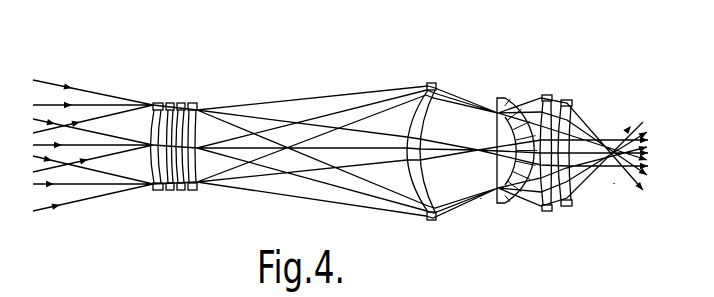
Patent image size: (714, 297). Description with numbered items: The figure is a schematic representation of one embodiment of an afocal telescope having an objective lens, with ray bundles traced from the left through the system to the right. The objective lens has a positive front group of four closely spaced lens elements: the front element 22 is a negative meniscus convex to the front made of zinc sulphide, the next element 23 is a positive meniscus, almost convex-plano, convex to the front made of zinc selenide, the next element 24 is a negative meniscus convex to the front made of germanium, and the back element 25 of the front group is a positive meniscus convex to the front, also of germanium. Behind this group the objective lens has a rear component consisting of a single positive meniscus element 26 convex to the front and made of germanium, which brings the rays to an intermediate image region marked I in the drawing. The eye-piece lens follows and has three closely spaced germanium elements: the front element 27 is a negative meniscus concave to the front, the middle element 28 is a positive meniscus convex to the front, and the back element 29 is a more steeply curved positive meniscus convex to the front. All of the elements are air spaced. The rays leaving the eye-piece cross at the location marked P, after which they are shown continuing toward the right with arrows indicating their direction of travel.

The front element 22 is at (155, 102).
The positive meniscus element 23 is at (169, 102).
The negative meniscus element 24 is at (183, 102).
The back element of the front group 25 is at (197, 108).
The positive meniscus element 26 is at (432, 82).
The front element of the eye-piece 27 is at (507, 97).
The middle element of the eye-piece 28 is at (548, 95).
The back element of the eye-piece 29 is at (572, 99).
The intermediate image I is at (480, 203).
The exit pupil P is at (612, 191).